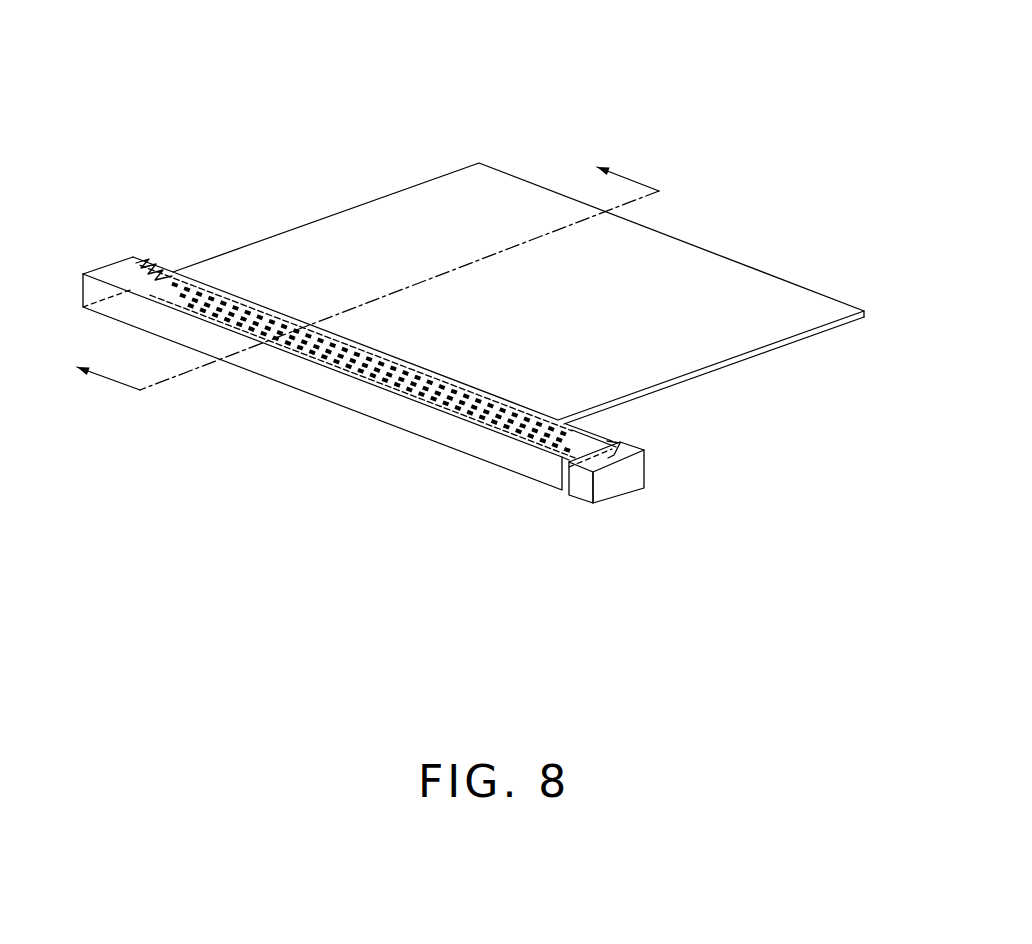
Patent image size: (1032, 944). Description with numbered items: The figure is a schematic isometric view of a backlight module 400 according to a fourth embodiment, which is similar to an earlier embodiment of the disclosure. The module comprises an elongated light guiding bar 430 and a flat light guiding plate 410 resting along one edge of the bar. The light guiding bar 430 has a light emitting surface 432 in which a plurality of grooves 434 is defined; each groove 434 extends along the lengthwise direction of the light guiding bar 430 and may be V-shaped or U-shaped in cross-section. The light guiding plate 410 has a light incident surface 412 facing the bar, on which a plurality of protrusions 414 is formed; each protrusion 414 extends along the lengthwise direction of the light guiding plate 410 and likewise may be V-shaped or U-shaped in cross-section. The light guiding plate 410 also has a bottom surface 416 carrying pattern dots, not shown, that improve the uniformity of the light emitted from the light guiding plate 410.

The backlight module 400 is at (395, 80).
The light guiding plate 410 is at (698, 293).
The light incident surface 412 is at (190, 288).
The protrusions 414 is at (612, 412).
The bottom surface 416 is at (822, 340).
The light guiding bar 430 is at (368, 407).
The light emitting surface 432 is at (604, 430).
The grooves 434 is at (153, 273).